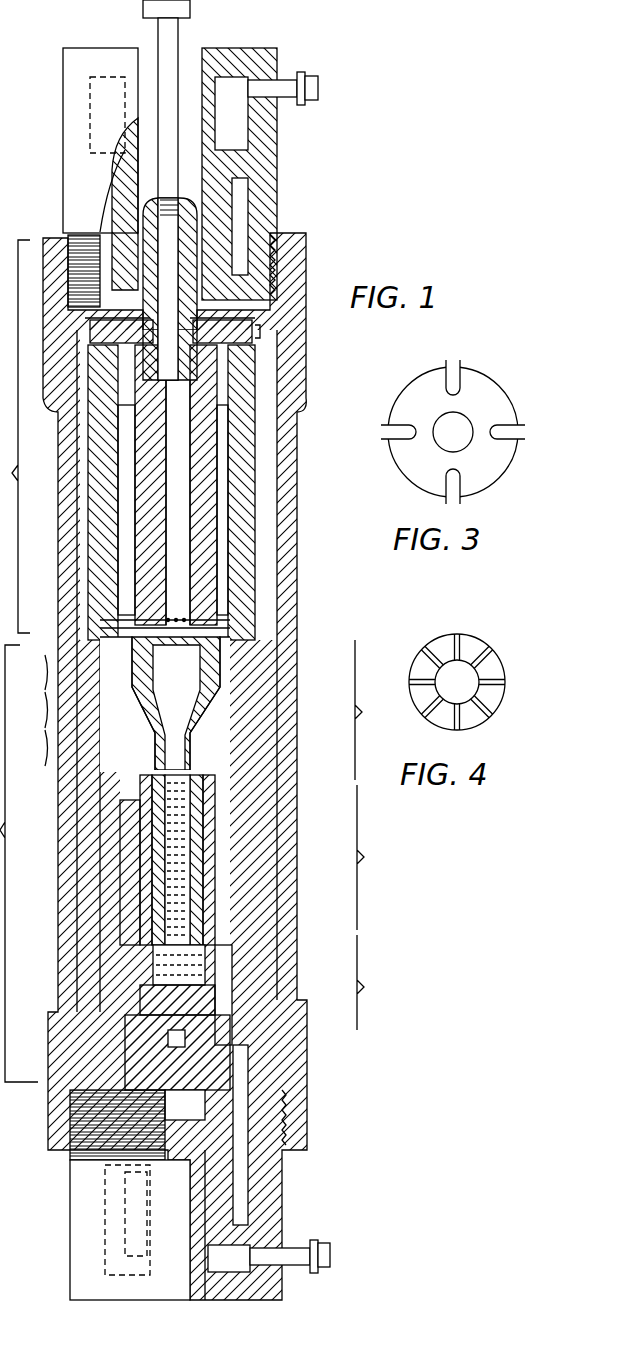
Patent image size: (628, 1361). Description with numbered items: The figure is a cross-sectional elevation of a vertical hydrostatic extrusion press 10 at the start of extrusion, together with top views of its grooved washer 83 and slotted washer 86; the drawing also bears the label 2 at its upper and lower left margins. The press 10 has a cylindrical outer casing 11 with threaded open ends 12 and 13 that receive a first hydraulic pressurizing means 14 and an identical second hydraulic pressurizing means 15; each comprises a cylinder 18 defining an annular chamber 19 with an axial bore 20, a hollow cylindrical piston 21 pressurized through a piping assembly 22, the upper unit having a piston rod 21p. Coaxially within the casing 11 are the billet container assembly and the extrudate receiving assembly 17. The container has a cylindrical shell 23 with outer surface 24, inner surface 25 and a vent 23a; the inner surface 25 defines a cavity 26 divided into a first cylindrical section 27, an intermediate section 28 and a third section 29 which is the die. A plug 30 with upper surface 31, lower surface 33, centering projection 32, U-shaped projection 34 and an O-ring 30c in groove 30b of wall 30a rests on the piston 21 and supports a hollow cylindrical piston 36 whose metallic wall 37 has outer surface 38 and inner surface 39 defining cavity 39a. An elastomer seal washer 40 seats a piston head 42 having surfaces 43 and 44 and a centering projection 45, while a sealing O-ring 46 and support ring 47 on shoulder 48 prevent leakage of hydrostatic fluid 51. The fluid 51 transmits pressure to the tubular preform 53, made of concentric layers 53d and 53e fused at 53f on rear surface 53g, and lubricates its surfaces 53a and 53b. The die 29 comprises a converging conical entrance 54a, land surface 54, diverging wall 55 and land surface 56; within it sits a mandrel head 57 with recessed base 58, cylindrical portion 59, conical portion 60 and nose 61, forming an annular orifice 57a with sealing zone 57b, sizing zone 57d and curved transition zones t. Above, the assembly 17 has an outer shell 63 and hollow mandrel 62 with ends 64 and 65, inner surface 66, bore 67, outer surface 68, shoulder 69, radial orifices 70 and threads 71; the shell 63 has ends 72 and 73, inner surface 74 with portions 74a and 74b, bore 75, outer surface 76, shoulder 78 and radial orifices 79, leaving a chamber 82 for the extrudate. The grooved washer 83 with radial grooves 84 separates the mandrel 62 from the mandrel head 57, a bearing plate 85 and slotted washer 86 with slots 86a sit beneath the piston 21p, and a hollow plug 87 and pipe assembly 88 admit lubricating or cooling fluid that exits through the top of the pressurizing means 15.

In FIG. 1, the valve 2 is at (19, 709).
In FIG. 1, the hydrostatic extrusion press 10 is at (325, 491).
In FIG. 1, the outer casing 11 is at (300, 840).
In FIG. 1, the threaded open end 12 is at (283, 1155).
In FIG. 1, the threaded open end 13 is at (280, 232).
In FIG. 1, the first hydraulic pressurizing means 14 is at (295, 1222).
In FIG. 1, the second hydraulic pressurizing means 15 is at (280, 133).
In FIG. 1, the extrudate receiving assembly 17 is at (15, 436).
In FIG. 1, the cylinder 18 is at (285, 1197).
In FIG. 1, the annular chamber 19 is at (233, 1172).
In FIG. 1, the axial bore 20 is at (131, 1230).
In FIG. 1, the hollow cylindrical piston 21 is at (219, 1140).
In FIG. 1, the piston rod 21p is at (232, 235).
In FIG. 1, the piping assembly 22 is at (325, 1245).
In FIG. 1, the cylindrical shell 23 is at (268, 738).
In FIG. 1, the vent 23a is at (145, 940).
In FIG. 1, the cylindrical outer surface 24 is at (250, 775).
In FIG. 1, the inner surface 25 is at (215, 862).
In FIG. 1, the axial cavity 26 is at (128, 930).
In FIG. 1, the first cylindrical section 27 is at (376, 982).
In FIG. 1, the intermediate cylindrical section 28 is at (376, 857).
In FIG. 1, the third section 29 is at (374, 710).
In FIG. 1, the cylindrical plug 30 is at (177, 1052).
In FIG. 1, the wall 30a is at (245, 1078).
In FIG. 1, the groove 30b is at (235, 1060).
In FIG. 1, the O-ring 30c is at (240, 1020).
In FIG. 1, the upper surface 31 is at (268, 975).
In FIG. 1, the projection 32 is at (185, 1105).
In FIG. 1, the lower surface 33 is at (247, 1142).
In FIG. 1, the cylindrical projection 34 is at (194, 1049).
In FIG. 1, the hollow cylindrical piston 36 is at (260, 952).
In FIG. 1, the metallic wall 37 is at (179, 965).
In FIG. 1, the outer surface 38 is at (100, 990).
In FIG. 1, the inner surface 39 is at (110, 975).
In FIG. 1, the axial cavity 39a is at (120, 960).
In FIG. 1, the elastomer seal washer 40 is at (60, 1055).
In FIG. 1, the piston head 42 is at (177, 998).
In FIG. 1, the upper surface 43 is at (247, 995).
In FIG. 1, the lower surface 44 is at (60, 1025).
In FIG. 1, the solid projection 45 is at (140, 1040).
In FIG. 1, the sealing O-ring 46 is at (215, 905).
In FIG. 1, the support ring 47 is at (215, 912).
In FIG. 1, the shoulder 48 is at (235, 940).
In FIG. 1, the hydrostatic fluid 51 is at (177, 860).
In FIG. 1, the thermoplastic polymer preform 53 is at (265, 812).
In FIG. 1, the inner surface 53a is at (215, 800).
In FIG. 1, the outside surface 53b is at (145, 785).
In FIG. 1, the concentric layer 53d is at (265, 768).
In FIG. 1, the concentric layer 53e is at (215, 882).
In FIG. 1, the fusion weld 53f is at (200, 935).
In FIG. 1, the rear surface 53g is at (130, 948).
In FIG. 1, the cylindrical axial land surface 54 is at (32, 748).
In FIG. 1, the converging conical entrance 54a is at (100, 810).
In FIG. 1, the diverging wall surface 55 is at (32, 710).
In FIG. 1, the cylindrical axial land surface 56 is at (32, 673).
In FIG. 1, the mandrel head 57 is at (165, 704).
In FIG. 1, the annular orifice 57a is at (145, 770).
In FIG. 1, the sealing zone 57b is at (155, 748).
In FIG. 1, the cylindrical sizing zone 57d is at (262, 683).
In FIG. 1, the recessed base surface 58 is at (181, 707).
In FIG. 1, the cylindrical lower portion 59 is at (135, 680).
In FIG. 1, the conical upper portion 60 is at (140, 720).
In FIG. 1, the cylindrical nose portion 61 is at (181, 755).
In FIG. 1, the hollow mandrel 62 is at (176, 485).
In FIG. 1, the outer shell 63 is at (162, 510).
In FIG. 1, the open lower end 64 is at (190, 655).
In FIG. 1, the open upper end 65 is at (175, 400).
In FIG. 1, the inner surface 66 is at (177, 502).
In FIG. 1, the cylindrical bore 67 is at (177, 533).
In FIG. 1, the outer surface 68 is at (125, 510).
In FIG. 1, the shoulder 69 is at (245, 585).
In FIG. 1, the radial orifices 70 is at (176, 615).
In FIG. 1, the threads 71 is at (232, 378).
In FIG. 1, the open lower end 72 is at (297, 625).
In FIG. 1, the open upper end 73 is at (95, 378).
In FIG. 1, the inner surface 74 is at (292, 437).
In FIG. 1, the upper portion 74a is at (38, 430).
In FIG. 1, the lower portion 74b is at (115, 545).
In FIG. 1, the cylindrical bore 75 is at (85, 455).
In FIG. 1, the outer surface 76 is at (90, 472).
In FIG. 1, the shoulder 78 is at (275, 663).
In FIG. 1, the radial orifices 79 is at (95, 615).
In FIG. 1, the chamber 82 is at (262, 537).
In FIG. 1, the grooved washer 83 is at (100, 628).
In FIG. 4, the grooved washer 83 is at (478, 645).
In FIG. 1, the radial grooves 84 is at (240, 600).
In FIG. 4, the radial grooves 84 is at (455, 640).
In FIG. 1, the bearing plate 85 is at (292, 330).
In FIG. 1, the slotted washer 86 is at (90, 330).
In FIG. 3, the slotted washer 86 is at (483, 372).
In FIG. 1, the slots 86a is at (250, 310).
In FIG. 3, the slots 86a is at (452, 372).
In FIG. 1, the hollow plug 87 is at (240, 215).
In FIG. 1, the pipe assembly 88 is at (180, 30).
In FIG. 1, the transition zones t is at (261, 711).